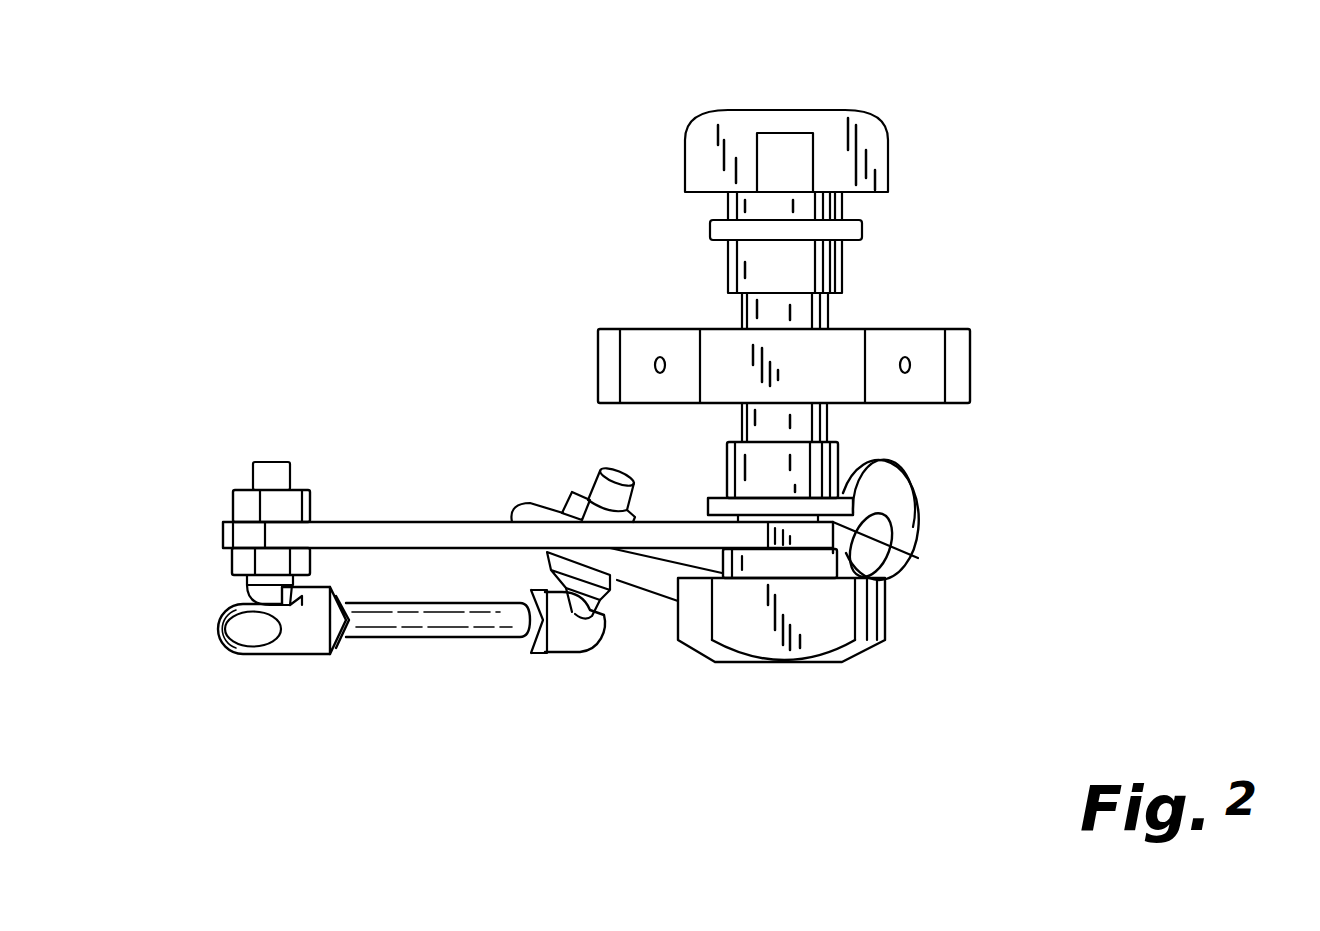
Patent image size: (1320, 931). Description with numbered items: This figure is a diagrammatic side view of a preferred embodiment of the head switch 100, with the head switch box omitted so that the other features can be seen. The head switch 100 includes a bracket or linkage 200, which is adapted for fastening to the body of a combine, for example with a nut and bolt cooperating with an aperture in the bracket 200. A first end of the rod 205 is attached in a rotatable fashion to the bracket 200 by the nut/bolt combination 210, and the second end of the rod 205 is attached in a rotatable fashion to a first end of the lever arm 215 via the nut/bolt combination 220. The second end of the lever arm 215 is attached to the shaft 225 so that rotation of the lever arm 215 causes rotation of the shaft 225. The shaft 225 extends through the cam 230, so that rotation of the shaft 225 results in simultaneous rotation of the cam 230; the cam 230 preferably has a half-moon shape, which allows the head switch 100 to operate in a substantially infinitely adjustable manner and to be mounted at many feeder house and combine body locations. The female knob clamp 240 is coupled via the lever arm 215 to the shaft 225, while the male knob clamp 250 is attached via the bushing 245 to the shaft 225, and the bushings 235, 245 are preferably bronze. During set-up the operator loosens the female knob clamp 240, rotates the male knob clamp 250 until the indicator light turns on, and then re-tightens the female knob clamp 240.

The head switch 100 is at (1103, 285).
The bracket 200 is at (913, 540).
The rod 205 is at (433, 640).
The nut/bolt combination 210 is at (578, 485).
The lever arm 215 is at (392, 522).
The nut/bolt combination 220 is at (235, 490).
The shaft 225 is at (838, 428).
The cam 230 is at (970, 398).
The bushing 235 is at (915, 562).
The female knob clamp 240 is at (780, 663).
The bushing 245 is at (862, 228).
The male knob clamp 250 is at (800, 108).